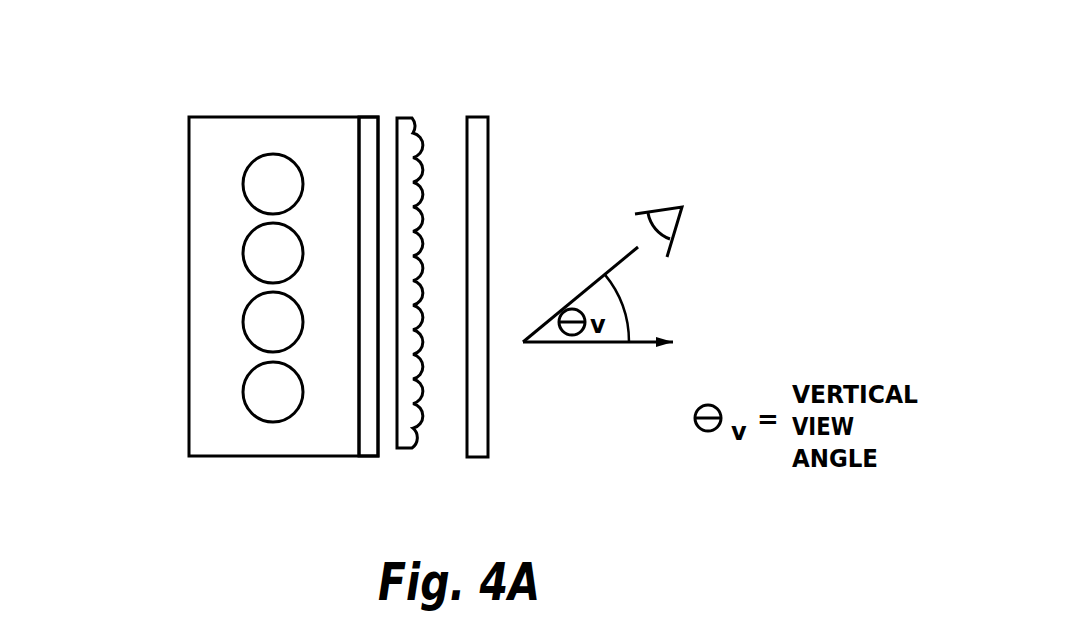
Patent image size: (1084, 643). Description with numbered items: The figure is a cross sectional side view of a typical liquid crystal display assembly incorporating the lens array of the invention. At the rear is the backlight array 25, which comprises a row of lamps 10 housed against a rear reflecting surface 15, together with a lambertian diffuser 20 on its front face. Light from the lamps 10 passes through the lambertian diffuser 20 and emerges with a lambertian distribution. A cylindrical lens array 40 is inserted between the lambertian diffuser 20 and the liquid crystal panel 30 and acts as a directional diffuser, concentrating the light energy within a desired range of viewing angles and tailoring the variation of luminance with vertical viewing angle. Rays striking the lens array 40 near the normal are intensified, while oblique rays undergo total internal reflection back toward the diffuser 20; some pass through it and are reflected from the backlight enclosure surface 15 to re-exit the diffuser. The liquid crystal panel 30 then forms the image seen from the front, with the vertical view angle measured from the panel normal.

The lamp 10 is at (267, 188).
The rear reflecting surface 15 is at (189, 377).
The lambertian diffuser 20 is at (369, 113).
The backlight array 25 is at (273, 117).
The liquid crystal panel 30 is at (489, 142).
The lens array 40 is at (412, 118).